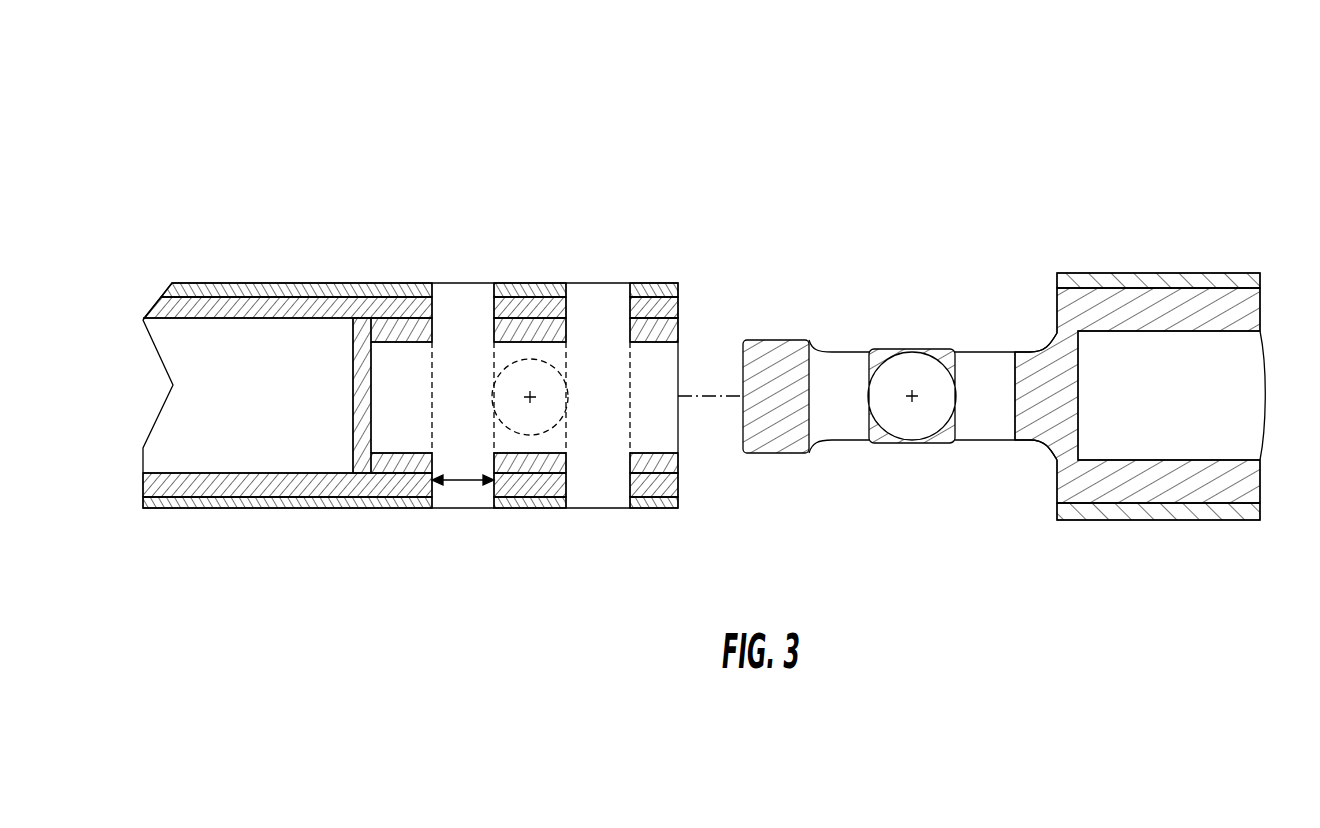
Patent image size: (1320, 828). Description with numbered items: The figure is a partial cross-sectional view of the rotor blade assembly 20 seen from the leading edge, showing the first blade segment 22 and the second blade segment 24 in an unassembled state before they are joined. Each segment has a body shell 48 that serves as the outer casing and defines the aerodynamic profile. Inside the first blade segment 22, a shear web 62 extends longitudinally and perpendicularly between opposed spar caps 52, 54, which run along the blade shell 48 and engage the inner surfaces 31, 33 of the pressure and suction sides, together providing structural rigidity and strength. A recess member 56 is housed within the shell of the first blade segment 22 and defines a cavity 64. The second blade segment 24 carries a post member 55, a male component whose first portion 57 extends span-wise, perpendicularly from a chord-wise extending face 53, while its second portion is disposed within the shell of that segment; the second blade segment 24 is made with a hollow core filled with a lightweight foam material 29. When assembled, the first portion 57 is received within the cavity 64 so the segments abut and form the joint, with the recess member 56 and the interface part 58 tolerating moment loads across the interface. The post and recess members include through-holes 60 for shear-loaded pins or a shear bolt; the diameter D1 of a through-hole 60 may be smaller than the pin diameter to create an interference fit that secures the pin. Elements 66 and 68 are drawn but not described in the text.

The rotor blade assembly 20 is at (238, 131).
The first blade segment 22 is at (173, 259).
The second blade segment 24 is at (1209, 251).
The foam material 29 is at (1187, 412).
The inner surface 31 is at (216, 492).
The inner surface 33 is at (288, 300).
The body shell 48 is at (348, 293).
The spar cap 52 is at (237, 294).
The chord-wise extending face 53 is at (1060, 497).
The spar cap 54 is at (252, 497).
The post member 55 is at (779, 456).
The recess member 56 is at (391, 462).
The first portion 57 is at (935, 348).
The interface part 58 is at (1200, 487).
The through-hole 60 is at (468, 310).
The shear web 62 is at (268, 401).
The cavity 64 is at (648, 432).
The head 66 is at (785, 340).
The insert top wall 68 is at (405, 347).
The diameter of the through-hole D1 is at (467, 482).